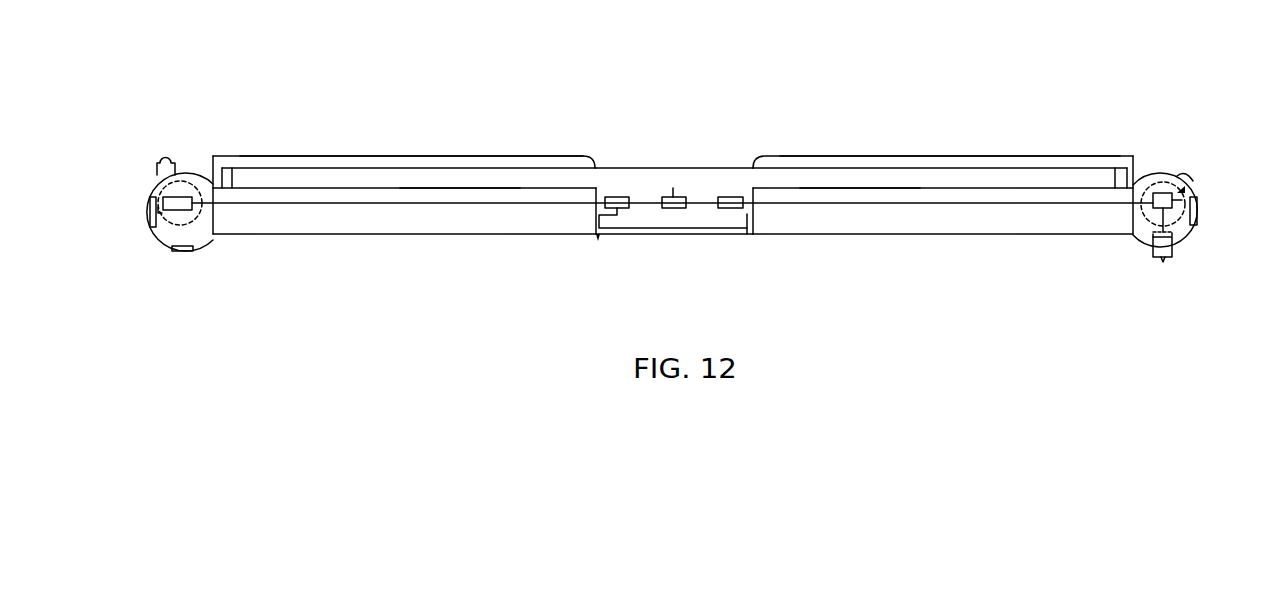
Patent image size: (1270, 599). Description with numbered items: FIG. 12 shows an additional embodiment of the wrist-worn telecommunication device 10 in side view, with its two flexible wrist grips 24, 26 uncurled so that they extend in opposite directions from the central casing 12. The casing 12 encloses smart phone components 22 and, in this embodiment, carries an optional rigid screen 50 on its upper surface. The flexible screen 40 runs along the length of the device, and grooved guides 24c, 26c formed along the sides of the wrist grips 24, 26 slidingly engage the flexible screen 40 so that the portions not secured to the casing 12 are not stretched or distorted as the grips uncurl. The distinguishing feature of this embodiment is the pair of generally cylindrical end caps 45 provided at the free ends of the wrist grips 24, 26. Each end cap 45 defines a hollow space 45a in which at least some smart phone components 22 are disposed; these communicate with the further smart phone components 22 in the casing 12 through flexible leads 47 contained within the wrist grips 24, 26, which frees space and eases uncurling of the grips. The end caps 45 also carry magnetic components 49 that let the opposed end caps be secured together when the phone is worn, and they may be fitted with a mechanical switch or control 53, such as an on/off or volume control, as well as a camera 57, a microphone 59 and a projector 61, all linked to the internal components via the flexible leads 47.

The telecommunication device 10 is at (712, 134).
The casing 12 is at (747, 215).
The smart phone components 22 is at (623, 208).
The flexible wrist grip 24 is at (915, 217).
The grooved guide 24c is at (980, 162).
The flexible wrist grip 26 is at (332, 220).
The grooved guide 26c is at (332, 167).
The flexible screen 40 is at (520, 175).
The end cap 45 is at (158, 245).
The hollow space 45a is at (195, 193).
The flexible lead 47 is at (460, 202).
The magnetic component 49 is at (152, 215).
The rigid screen 50 is at (723, 230).
The mechanical switch or control 53 is at (1182, 173).
The camera 57 is at (1163, 262).
The microphone 59 is at (597, 238).
The projector 61 is at (156, 176).